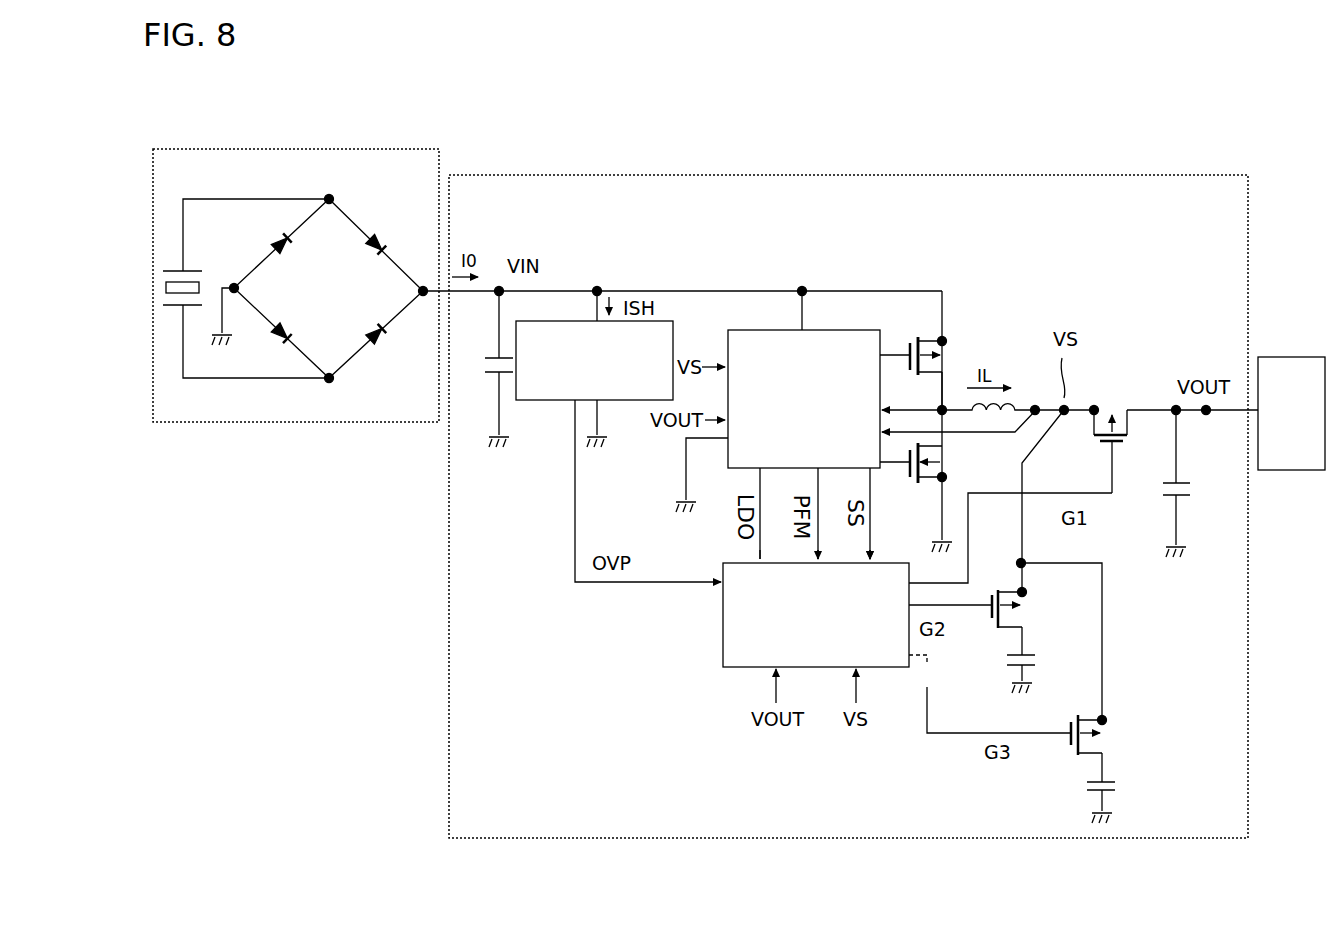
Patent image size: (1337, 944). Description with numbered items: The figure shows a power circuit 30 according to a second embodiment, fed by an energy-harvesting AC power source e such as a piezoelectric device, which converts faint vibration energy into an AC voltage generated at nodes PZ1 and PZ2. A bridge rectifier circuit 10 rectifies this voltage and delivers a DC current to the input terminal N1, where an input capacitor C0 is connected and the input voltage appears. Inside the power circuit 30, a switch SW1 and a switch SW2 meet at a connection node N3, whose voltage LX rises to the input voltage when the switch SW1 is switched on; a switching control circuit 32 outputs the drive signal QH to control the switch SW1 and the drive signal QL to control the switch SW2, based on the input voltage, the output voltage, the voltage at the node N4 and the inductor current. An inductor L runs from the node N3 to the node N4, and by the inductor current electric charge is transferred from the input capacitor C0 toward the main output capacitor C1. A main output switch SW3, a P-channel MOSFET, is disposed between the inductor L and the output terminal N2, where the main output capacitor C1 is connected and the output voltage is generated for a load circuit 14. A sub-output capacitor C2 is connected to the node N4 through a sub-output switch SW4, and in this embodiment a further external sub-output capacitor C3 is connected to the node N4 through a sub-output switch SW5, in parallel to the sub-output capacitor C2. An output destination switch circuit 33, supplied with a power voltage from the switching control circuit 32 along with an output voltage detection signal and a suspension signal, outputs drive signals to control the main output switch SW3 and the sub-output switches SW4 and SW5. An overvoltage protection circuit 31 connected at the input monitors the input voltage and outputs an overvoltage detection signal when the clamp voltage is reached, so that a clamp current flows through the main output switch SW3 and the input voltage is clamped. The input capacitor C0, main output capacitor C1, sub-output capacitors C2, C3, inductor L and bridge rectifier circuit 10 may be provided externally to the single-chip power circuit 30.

The bridge rectifier circuit 10 is at (275, 148).
The load circuit 14 is at (1294, 357).
The power circuit 30 is at (576, 174).
The overvoltage protection circuit 31 is at (540, 406).
The switching control circuit 32 is at (745, 327).
The output destination switch circuit 33 is at (723, 608).
The AC power source e is at (246, 288).
The node PZ1 is at (328, 229).
The node PZ2 is at (328, 351).
The input capacitor C0 is at (484, 369).
The main output capacitor C1 is at (1162, 483).
The sub-output capacitor C2 is at (1004, 660).
The sub-output capacitor C3 is at (1083, 788).
The input terminal N1 is at (485, 305).
The output terminal N2 is at (1221, 427).
The connection node N3 is at (926, 400).
The node N4 is at (1063, 432).
The drive signal QH is at (913, 345).
The drive signal QL is at (913, 473).
The switch SW1 is at (931, 340).
The switch SW2 is at (956, 463).
The main output switch SW3 is at (1112, 404).
The sub-output switch SW4 is at (1035, 608).
The sub-output switch SW5 is at (1116, 735).
The inductor L is at (1018, 399).
The voltage LX is at (942, 410).